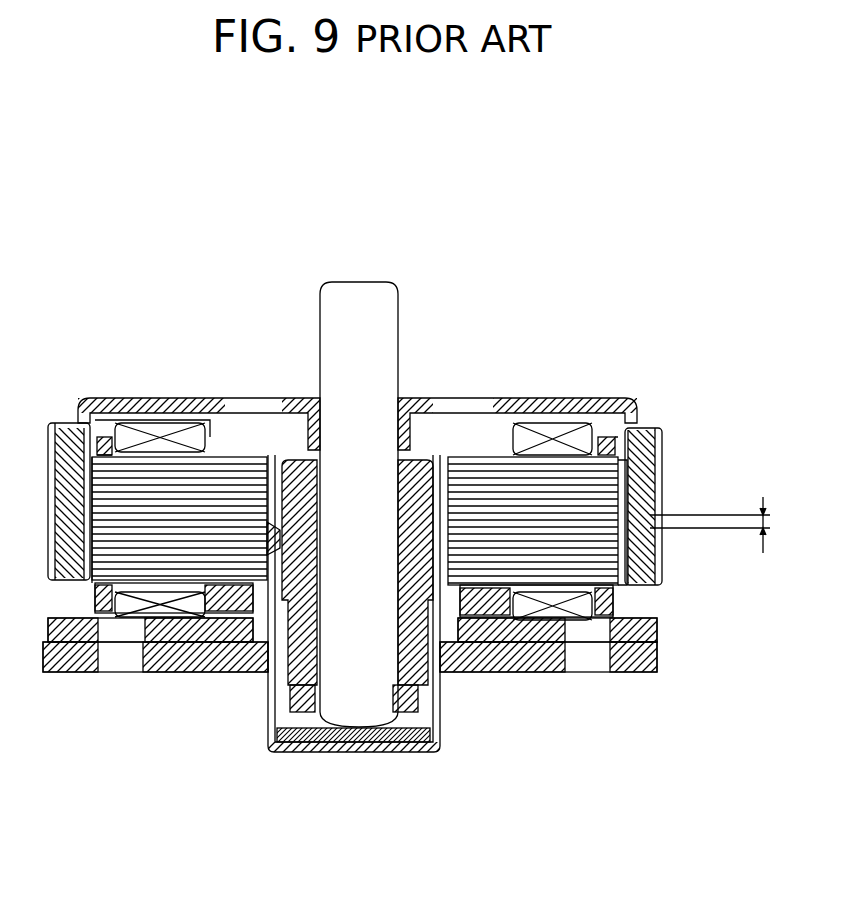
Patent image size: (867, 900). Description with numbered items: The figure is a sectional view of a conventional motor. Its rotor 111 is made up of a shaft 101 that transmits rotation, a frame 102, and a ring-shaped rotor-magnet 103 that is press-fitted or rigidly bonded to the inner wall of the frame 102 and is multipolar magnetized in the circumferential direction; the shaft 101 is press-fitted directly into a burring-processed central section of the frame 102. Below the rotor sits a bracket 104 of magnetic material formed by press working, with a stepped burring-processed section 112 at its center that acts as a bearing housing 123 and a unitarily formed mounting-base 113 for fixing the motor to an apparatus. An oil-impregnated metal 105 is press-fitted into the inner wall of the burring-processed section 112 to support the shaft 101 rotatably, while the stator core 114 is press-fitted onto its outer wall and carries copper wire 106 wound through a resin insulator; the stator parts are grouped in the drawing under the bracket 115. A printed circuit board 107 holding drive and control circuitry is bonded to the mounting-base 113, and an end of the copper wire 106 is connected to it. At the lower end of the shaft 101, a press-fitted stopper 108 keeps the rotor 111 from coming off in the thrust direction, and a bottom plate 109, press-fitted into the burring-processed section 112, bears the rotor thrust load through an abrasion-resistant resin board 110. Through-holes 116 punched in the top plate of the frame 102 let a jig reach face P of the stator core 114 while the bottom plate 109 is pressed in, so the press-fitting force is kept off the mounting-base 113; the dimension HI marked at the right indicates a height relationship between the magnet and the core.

The shaft 101 is at (388, 340).
The frame 102 is at (515, 398).
The rotor-magnet 103 is at (624, 407).
The bracket 104 is at (553, 668).
The oil-impregnated metal 105 is at (442, 713).
The copper wire 106 is at (630, 678).
The printed circuit board 107 is at (497, 670).
The stopper 108 is at (287, 715).
The bottom plate 109 is at (312, 753).
The resin board 110 is at (353, 755).
The rotor 111 is at (650, 265).
The burring-processed section 112 is at (270, 533).
The mounting-base 113 is at (178, 663).
The stator core 114 is at (545, 572).
The stator 115 is at (732, 773).
The through-holes 116 is at (258, 397).
The bearing housing 123 is at (445, 550).
The face of stator core P is at (243, 452).
The height of magnet above core HI is at (727, 525).